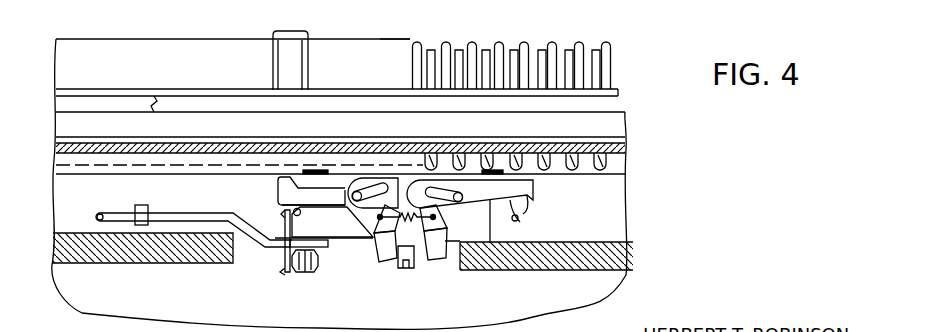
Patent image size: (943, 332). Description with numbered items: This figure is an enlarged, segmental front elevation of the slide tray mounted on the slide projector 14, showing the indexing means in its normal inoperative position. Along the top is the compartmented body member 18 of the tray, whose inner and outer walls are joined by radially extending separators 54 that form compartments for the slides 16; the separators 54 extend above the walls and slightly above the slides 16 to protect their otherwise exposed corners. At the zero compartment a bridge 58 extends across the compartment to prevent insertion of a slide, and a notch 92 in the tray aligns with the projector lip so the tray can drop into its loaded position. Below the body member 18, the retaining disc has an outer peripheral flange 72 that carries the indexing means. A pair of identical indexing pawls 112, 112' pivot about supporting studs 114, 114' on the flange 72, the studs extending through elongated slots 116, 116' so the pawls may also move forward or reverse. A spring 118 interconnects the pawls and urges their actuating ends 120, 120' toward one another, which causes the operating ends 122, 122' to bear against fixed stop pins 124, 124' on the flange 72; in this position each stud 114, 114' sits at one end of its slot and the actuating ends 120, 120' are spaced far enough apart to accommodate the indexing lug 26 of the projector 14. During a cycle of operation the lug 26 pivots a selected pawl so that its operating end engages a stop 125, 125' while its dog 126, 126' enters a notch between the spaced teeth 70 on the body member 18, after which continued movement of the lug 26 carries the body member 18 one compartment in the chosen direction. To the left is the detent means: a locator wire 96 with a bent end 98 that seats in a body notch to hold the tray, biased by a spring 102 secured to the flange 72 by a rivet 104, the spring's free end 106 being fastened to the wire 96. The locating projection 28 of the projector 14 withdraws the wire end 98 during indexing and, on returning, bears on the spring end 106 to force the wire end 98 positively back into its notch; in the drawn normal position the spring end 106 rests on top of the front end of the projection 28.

The slide projector 14 is at (337, 56).
The notch 92 is at (394, 19).
The bridge 58 is at (293, 33).
The separators 54 is at (273, 60).
The slides 16 is at (514, 50).
The body member 18 is at (655, 145).
The teeth 70 is at (598, 181).
The stop 125' is at (305, 145).
The stop 125 is at (515, 146).
The dog 126' is at (273, 191).
The operating end 122' is at (279, 162).
The supporting stud 114' is at (397, 163).
The indexing pawl 112' is at (361, 159).
The dog 126 is at (503, 194).
The supporting stud 114 is at (479, 160).
The indexing pawl 112 is at (484, 251).
The stop pin 124 is at (545, 214).
The elongated slot 116' is at (332, 222).
The bent end 98 is at (294, 211).
The spring 118 is at (420, 248).
The elongated slot 116 is at (438, 223).
The actuating end 120' is at (358, 268).
The actuating end 120 is at (432, 276).
The indexing lug 26 is at (405, 270).
The free end 106 is at (313, 247).
The flange 72 is at (65, 218).
The operating end 122 is at (546, 271).
The spring 102 is at (172, 215).
The rivet 104 is at (97, 224).
The locator wire 96 is at (288, 270).
The stop pin 124' is at (259, 251).
The locating projection 28 is at (305, 260).